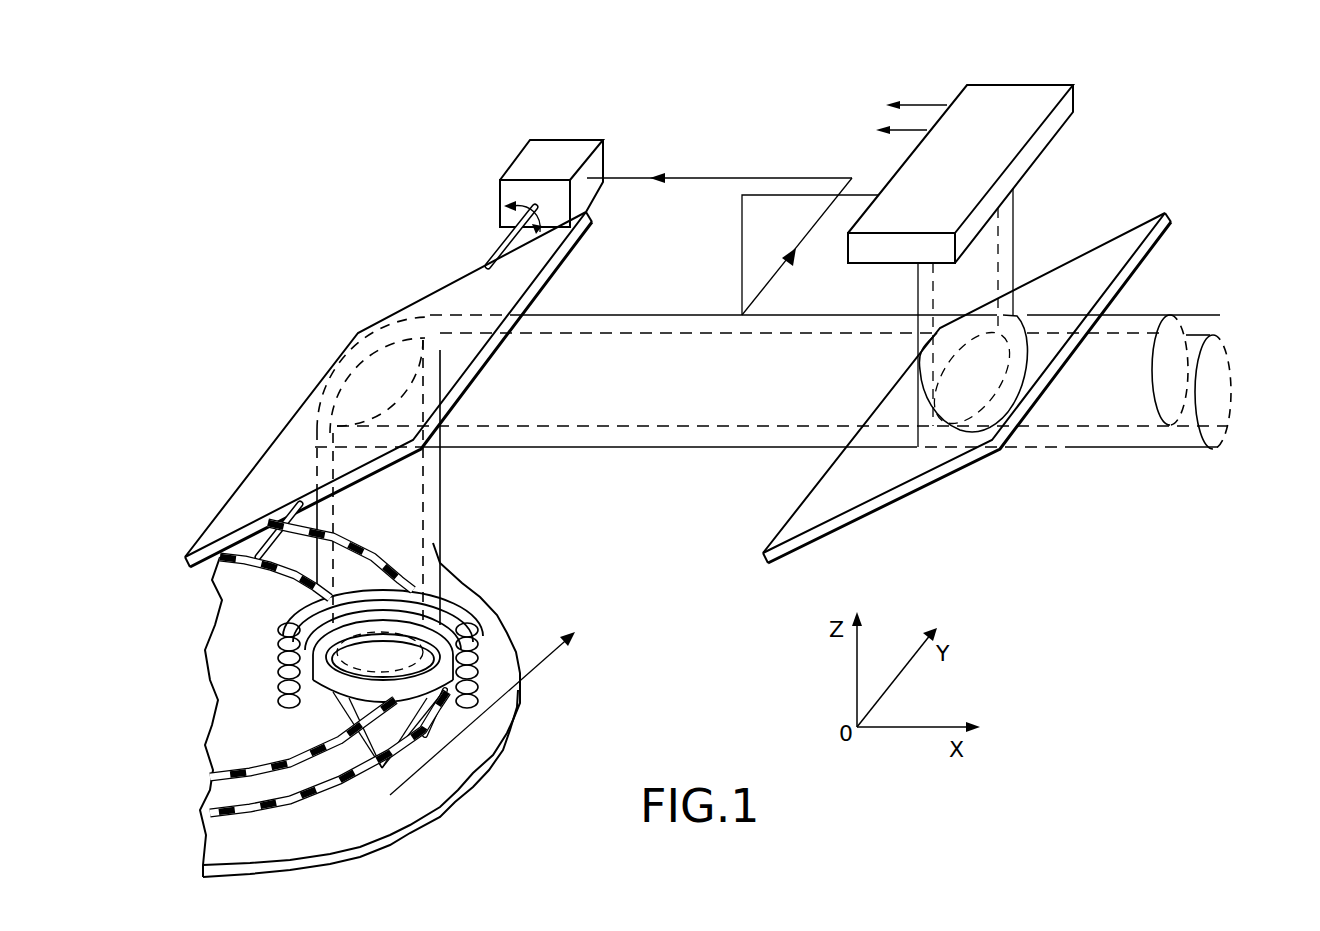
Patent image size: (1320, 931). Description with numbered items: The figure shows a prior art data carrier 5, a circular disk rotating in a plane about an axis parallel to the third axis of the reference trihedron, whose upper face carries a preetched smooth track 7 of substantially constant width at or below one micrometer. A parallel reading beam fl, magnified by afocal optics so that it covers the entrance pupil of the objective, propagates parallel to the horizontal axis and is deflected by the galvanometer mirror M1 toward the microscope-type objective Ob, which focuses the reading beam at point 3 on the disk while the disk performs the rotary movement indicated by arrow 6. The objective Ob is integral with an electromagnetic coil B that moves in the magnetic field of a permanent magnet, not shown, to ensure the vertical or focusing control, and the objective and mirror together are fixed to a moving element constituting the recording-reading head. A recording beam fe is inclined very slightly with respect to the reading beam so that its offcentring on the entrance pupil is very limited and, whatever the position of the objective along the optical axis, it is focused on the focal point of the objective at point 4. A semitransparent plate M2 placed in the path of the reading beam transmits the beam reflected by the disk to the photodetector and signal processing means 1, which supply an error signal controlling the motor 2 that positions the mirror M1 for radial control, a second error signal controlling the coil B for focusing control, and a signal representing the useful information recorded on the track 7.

The photodetector and signal processing means 1 is at (1098, 107).
The motor 2 is at (519, 156).
The reading focal point 3 is at (367, 742).
The recording focal point 4 is at (427, 737).
The data carrier 5 is at (503, 740).
The arrow indicating rotary movement 6 is at (537, 661).
The preetched track 7 is at (292, 770).
The galvanometer mirror M1 is at (311, 398).
The semitransparent plate M2 is at (1118, 236).
The electromagnetic coil B is at (457, 610).
The microscope-type objective Ob is at (480, 642).
The reading beam fl is at (1170, 315).
The recording beam fe is at (1217, 451).